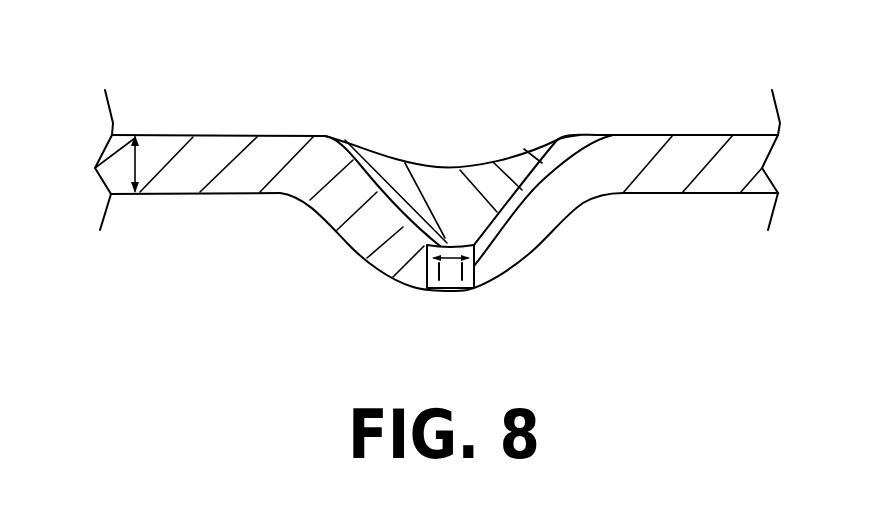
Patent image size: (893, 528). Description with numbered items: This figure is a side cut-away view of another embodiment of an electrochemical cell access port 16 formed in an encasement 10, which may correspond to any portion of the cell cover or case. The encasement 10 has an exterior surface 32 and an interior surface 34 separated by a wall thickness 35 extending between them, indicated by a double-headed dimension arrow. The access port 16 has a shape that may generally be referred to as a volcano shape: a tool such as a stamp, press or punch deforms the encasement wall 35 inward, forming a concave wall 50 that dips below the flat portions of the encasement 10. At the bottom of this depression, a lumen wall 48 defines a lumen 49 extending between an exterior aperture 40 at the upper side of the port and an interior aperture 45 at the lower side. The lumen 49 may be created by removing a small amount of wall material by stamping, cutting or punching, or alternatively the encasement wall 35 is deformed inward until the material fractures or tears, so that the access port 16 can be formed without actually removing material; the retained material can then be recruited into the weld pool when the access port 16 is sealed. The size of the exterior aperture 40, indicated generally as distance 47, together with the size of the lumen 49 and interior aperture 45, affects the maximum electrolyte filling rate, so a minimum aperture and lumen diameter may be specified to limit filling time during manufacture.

The encasement 10 is at (675, 157).
The access port 16 is at (460, 105).
The exterior surface 32 is at (195, 135).
The interior surface 34 is at (243, 193).
The wall thickness 35 is at (140, 172).
The exterior aperture 40 is at (450, 245).
The interior aperture 45 is at (457, 288).
The distance 47 is at (452, 260).
The lumen wall 48 is at (437, 272).
The lumen 49 is at (467, 272).
The concave wall 50 is at (550, 208).